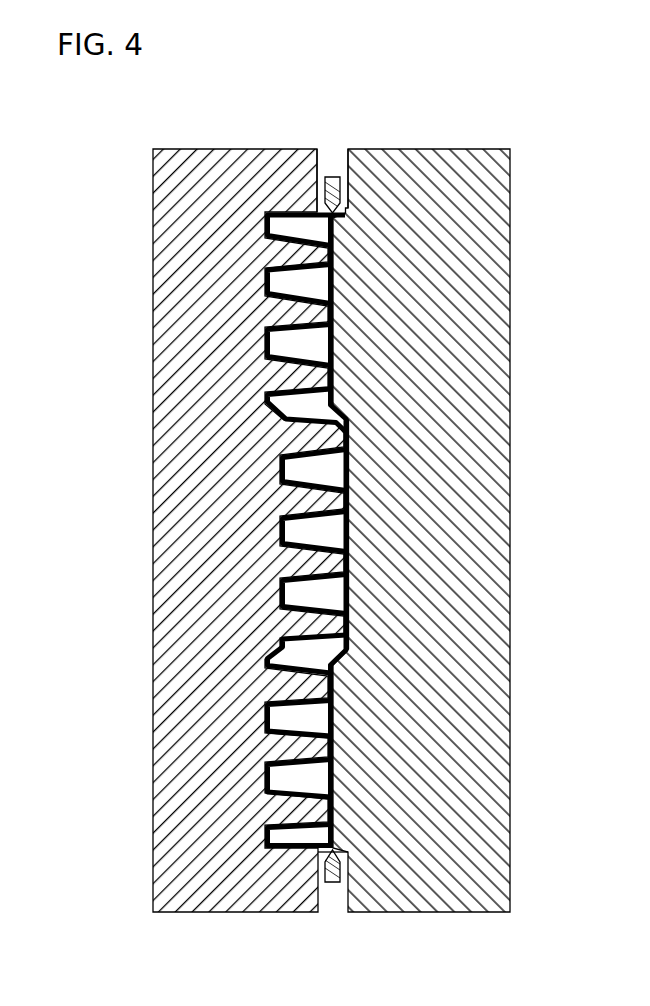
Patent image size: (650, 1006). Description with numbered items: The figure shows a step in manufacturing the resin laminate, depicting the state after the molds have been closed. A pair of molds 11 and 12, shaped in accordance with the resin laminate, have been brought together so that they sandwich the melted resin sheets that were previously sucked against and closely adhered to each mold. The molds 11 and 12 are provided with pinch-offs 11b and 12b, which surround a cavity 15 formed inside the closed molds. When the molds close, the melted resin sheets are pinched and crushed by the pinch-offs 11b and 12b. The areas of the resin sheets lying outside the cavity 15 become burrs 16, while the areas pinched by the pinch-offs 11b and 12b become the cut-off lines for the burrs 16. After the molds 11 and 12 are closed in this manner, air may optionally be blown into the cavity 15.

The mold 11 is at (405, 148).
The pinch-off 11b is at (330, 183).
The mold 12 is at (210, 148).
The pinch-off 12b is at (324, 174).
The cavity 15 is at (350, 468).
The burr 16 is at (333, 176).